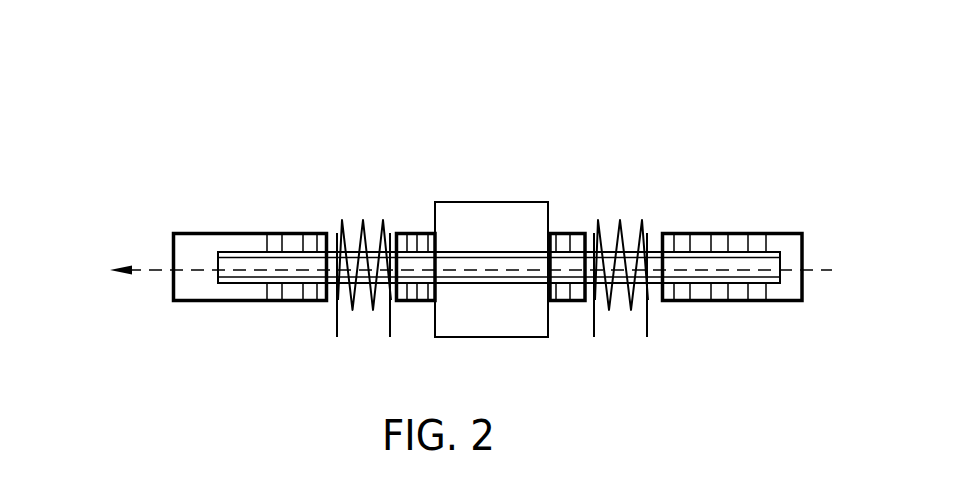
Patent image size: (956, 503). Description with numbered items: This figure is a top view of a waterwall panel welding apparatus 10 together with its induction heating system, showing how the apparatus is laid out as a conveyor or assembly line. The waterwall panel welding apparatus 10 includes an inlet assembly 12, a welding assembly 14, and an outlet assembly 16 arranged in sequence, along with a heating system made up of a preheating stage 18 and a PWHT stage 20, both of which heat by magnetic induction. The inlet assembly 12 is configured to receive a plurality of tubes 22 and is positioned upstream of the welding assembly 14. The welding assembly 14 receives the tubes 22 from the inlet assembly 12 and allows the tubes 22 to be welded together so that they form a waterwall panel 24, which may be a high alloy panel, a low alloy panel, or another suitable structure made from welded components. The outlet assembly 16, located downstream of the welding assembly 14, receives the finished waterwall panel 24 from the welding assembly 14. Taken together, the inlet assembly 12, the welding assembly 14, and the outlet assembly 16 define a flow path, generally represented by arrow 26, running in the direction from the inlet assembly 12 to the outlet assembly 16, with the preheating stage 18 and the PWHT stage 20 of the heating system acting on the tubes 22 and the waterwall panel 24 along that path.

The waterwall panel welding apparatus 10 is at (163, 68).
The inlet assembly 12 is at (742, 178).
The welding assembly 14 is at (507, 171).
The outlet assembly 16 is at (289, 173).
The preheating stage 18 is at (629, 312).
The PWHT stage 20 is at (353, 312).
The tubes 22 is at (682, 255).
The waterwall panel 24 is at (422, 255).
The arrow 26 is at (152, 268).